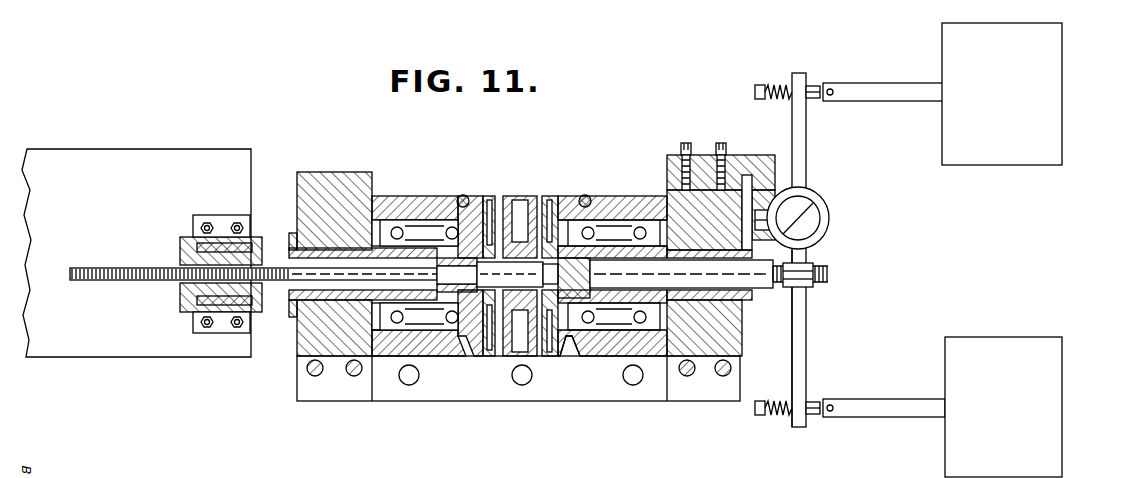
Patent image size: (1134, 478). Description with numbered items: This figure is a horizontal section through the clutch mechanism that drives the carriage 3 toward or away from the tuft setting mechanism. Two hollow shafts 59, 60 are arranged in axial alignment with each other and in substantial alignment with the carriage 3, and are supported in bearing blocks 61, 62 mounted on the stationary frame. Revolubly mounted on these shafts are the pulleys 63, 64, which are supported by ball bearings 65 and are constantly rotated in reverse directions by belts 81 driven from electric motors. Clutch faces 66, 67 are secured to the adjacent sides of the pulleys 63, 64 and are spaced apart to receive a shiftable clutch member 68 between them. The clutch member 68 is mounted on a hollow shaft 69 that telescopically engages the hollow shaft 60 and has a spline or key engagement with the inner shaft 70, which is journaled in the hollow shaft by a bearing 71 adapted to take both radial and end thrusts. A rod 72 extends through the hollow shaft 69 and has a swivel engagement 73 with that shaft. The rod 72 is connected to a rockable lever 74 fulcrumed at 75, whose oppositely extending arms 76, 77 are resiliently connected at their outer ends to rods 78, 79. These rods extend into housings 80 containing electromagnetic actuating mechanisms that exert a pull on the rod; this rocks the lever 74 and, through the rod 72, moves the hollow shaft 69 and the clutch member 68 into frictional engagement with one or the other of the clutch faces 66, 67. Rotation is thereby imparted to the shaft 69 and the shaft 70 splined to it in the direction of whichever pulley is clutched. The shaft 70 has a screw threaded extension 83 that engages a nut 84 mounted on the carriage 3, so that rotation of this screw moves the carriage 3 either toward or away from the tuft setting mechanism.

The carriage 3 is at (152, 162).
The hollow shaft 59 is at (298, 333).
The hollow shaft 60 is at (690, 312).
The bearing block 61 is at (347, 337).
The bearing block 62 is at (728, 347).
The pulley 63 is at (433, 196).
The pulley 64 is at (634, 196).
The ball bearings 65 is at (397, 196).
The clutch face 66 is at (494, 194).
The clutch face 67 is at (546, 196).
The shiftable clutch member 68 is at (515, 196).
The hollow shaft 69 is at (565, 340).
The inner shaft 70 is at (512, 276).
The bearing 71 is at (442, 322).
The rod 72 is at (752, 278).
The swivel engagement 73 is at (586, 320).
The rockable lever 74 is at (803, 260).
The fulcrum 75 is at (817, 215).
The arm 76 is at (797, 155).
The arm 77 is at (800, 382).
The rod 78 is at (852, 90).
The rod 79 is at (885, 410).
The housing 80 is at (1040, 60).
The belt 81 is at (464, 194).
The screw threaded extension 83 is at (157, 282).
The nut 84 is at (207, 263).